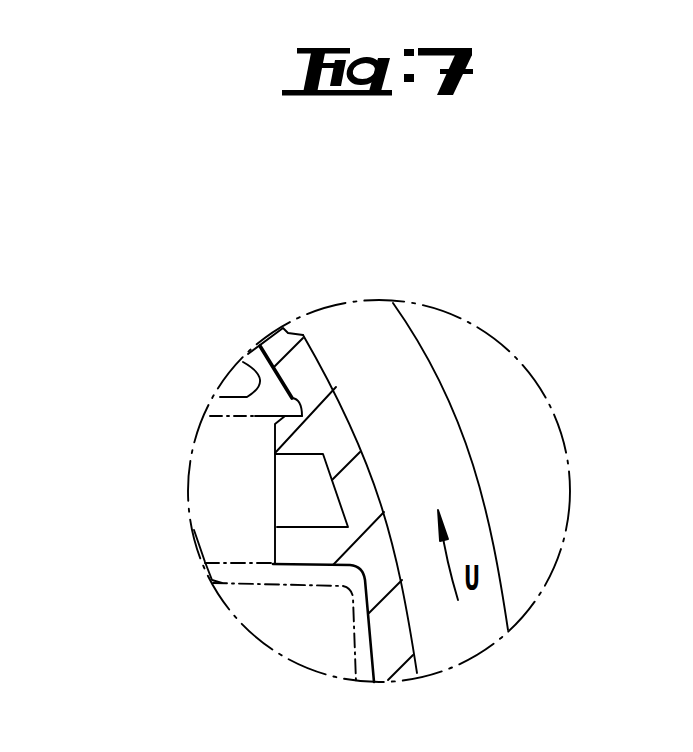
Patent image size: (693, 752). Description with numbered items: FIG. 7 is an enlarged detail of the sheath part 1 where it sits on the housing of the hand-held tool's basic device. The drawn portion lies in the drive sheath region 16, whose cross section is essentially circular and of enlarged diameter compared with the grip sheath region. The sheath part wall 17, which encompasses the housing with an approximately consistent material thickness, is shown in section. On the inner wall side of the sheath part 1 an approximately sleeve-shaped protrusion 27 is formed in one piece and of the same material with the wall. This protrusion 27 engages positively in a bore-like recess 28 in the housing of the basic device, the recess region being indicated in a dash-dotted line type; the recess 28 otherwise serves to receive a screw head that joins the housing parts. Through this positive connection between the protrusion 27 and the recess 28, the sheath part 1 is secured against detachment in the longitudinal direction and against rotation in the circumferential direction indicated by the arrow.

The sheath part 1 is at (276, 303).
The drive sheath region 16 is at (393, 632).
The sheath part wall 17 is at (370, 497).
The protrusion 27 is at (298, 447).
The recess 28 is at (217, 517).